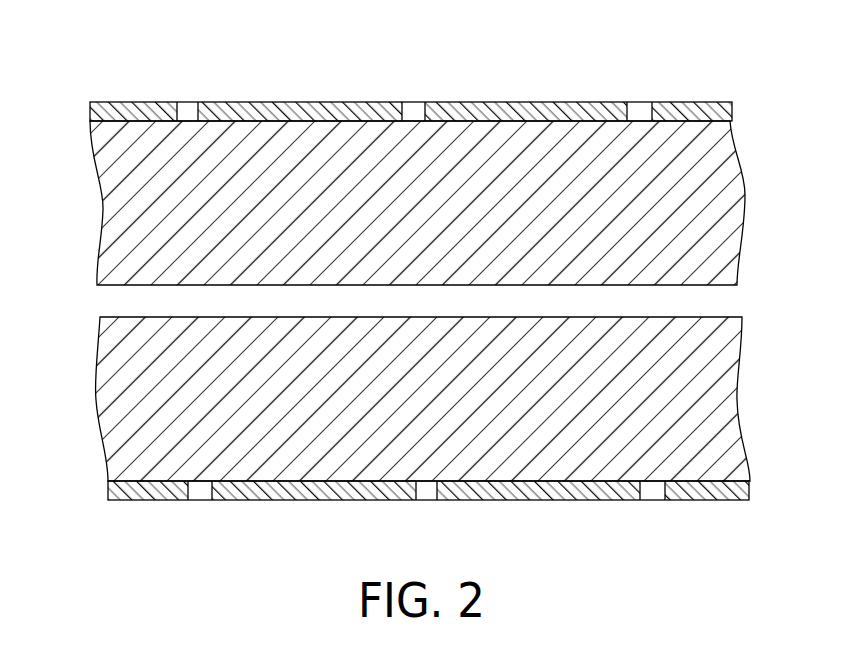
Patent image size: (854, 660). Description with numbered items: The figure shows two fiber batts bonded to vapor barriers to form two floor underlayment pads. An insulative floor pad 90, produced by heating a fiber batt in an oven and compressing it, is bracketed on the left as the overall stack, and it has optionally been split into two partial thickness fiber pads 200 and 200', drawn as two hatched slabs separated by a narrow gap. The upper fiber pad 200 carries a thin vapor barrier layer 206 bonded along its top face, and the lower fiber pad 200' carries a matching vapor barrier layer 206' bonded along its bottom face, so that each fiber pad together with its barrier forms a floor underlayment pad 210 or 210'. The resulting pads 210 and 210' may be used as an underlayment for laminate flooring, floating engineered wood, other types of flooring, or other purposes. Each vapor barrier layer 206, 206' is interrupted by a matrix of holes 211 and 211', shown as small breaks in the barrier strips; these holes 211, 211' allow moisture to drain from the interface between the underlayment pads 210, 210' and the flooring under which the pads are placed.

The insulative floor pad 90 is at (78, 121).
The fiber pad 200 is at (456, 203).
The fiber pad 200' is at (457, 399).
The vapor barrier layer 206 is at (411, 89).
The vapor barrier layer 206' is at (428, 513).
The floor underlayment pad 210 is at (458, 160).
The floor underlayment pad 210' is at (471, 446).
The holes 211 is at (377, 96).
The holes 211' is at (466, 507).